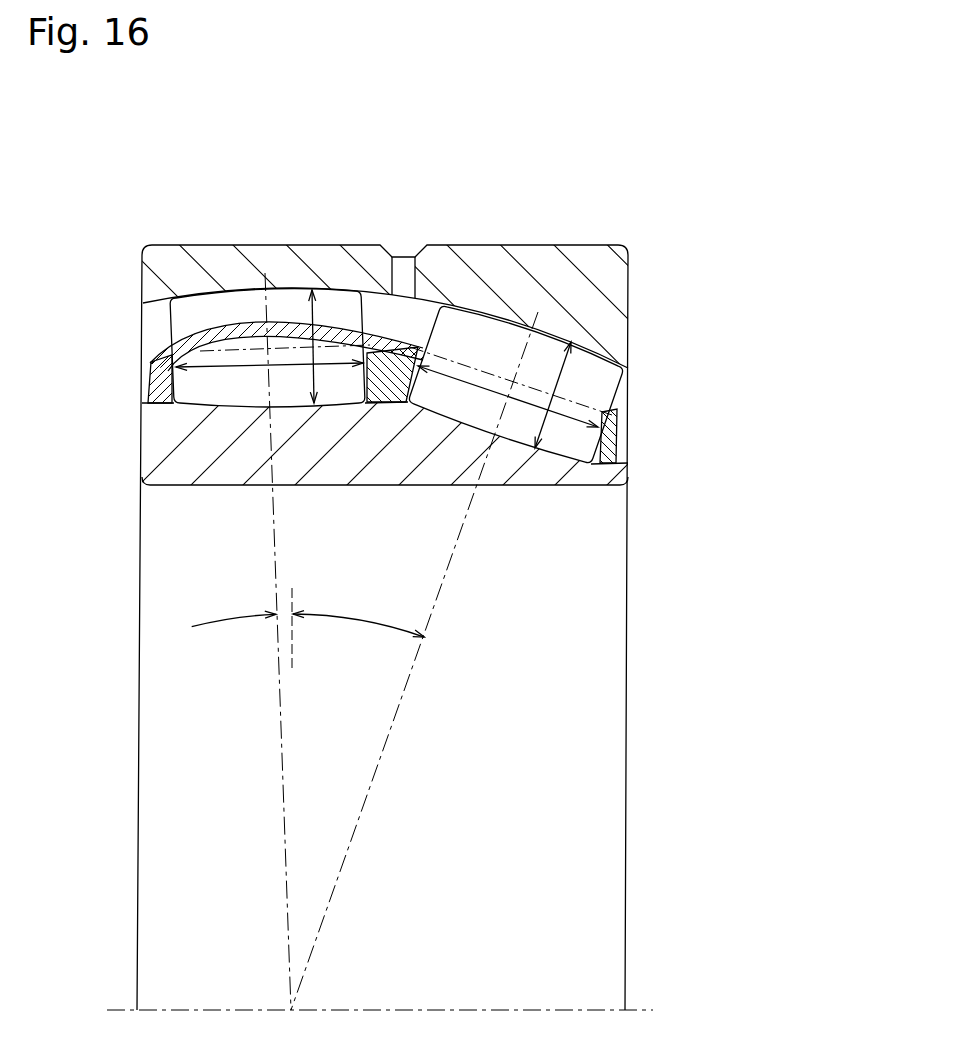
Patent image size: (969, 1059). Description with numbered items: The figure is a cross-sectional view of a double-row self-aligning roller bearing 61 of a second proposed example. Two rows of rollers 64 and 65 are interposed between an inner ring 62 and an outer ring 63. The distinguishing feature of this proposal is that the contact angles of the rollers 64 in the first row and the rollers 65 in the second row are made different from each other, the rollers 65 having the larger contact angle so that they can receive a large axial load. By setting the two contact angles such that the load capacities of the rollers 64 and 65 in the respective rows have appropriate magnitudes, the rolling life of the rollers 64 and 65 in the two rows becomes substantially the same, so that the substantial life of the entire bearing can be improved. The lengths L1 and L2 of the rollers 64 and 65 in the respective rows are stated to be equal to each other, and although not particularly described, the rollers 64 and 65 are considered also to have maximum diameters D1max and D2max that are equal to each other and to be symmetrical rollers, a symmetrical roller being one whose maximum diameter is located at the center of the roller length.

The double-row self-aligning roller bearing 61 is at (401, 565).
The inner ring 62 is at (581, 478).
The outer ring 63 is at (226, 268).
The roller 64 is at (182, 319).
The roller 65 is at (607, 377).
The maximum diameter of roller in first row D1max is at (314, 318).
The maximum diameter of roller in second row D2max is at (558, 377).
The length of roller in first row L1 is at (218, 370).
The length of roller in second row L2 is at (605, 447).